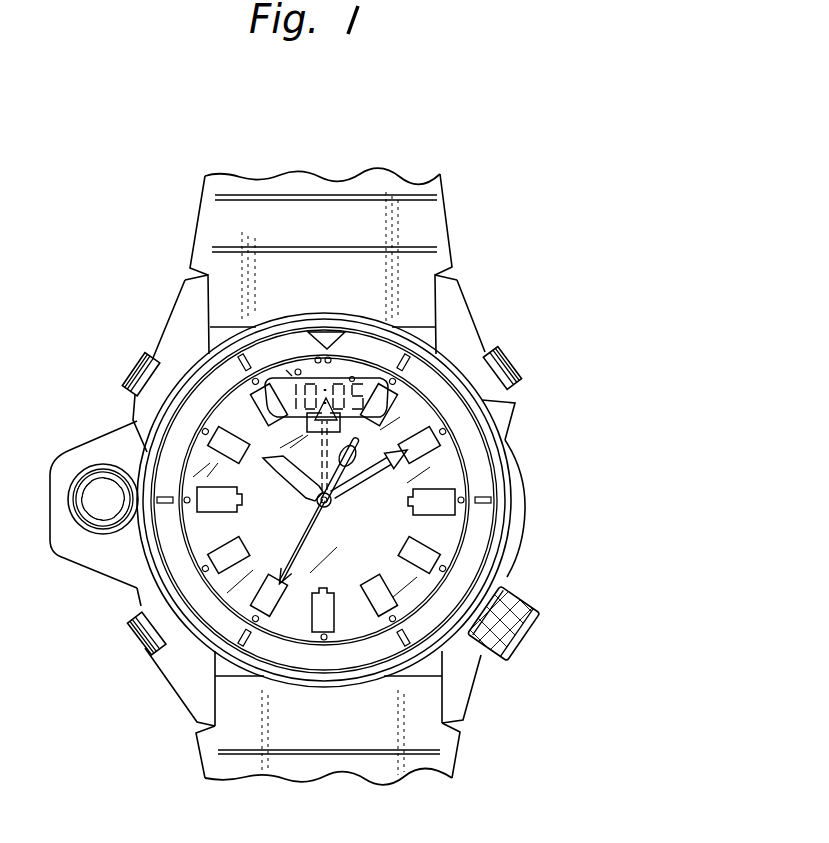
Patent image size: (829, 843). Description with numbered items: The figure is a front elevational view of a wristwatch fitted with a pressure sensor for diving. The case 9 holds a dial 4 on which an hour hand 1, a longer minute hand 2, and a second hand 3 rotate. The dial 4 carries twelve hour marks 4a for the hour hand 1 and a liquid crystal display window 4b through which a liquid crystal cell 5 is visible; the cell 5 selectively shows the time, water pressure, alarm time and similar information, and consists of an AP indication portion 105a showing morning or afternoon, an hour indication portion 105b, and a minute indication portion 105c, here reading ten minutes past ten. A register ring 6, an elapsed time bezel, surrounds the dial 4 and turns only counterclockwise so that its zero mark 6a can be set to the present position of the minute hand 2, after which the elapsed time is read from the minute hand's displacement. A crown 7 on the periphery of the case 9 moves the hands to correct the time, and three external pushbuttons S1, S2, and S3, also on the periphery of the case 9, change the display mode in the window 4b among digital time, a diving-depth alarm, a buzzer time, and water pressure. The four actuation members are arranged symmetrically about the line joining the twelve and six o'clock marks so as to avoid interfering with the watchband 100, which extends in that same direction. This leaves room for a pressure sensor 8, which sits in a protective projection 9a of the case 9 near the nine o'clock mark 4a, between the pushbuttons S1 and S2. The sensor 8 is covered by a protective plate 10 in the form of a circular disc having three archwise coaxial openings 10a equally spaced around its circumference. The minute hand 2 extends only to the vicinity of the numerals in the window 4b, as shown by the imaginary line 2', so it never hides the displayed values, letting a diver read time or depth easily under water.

The watchband 100 is at (417, 218).
The AP indication portion 105a is at (289, 373).
The hour indication portion 105b is at (298, 369).
The minute indication portion 105c is at (355, 377).
The hour hand 1 is at (283, 476).
The minute hand 2 is at (445, 472).
The imaginary line 2' is at (522, 410).
The second hand 3 is at (301, 568).
The dial 4 is at (400, 582).
The hour marks 4a is at (441, 498).
The liquid crystal display window 4b is at (327, 334).
The liquid crystal cell 5 is at (358, 380).
The register ring 6 is at (474, 553).
The zero mark 6a is at (348, 377).
The crown 7 is at (516, 646).
The pressure sensor 8 is at (71, 528).
The case 9 is at (200, 695).
The protective projection 9a is at (86, 555).
The protective plate 10 is at (84, 488).
The openings 10a is at (93, 503).
The pushbutton S1 is at (149, 356).
The pushbutton S2 is at (140, 633).
The pushbutton S3 is at (507, 356).